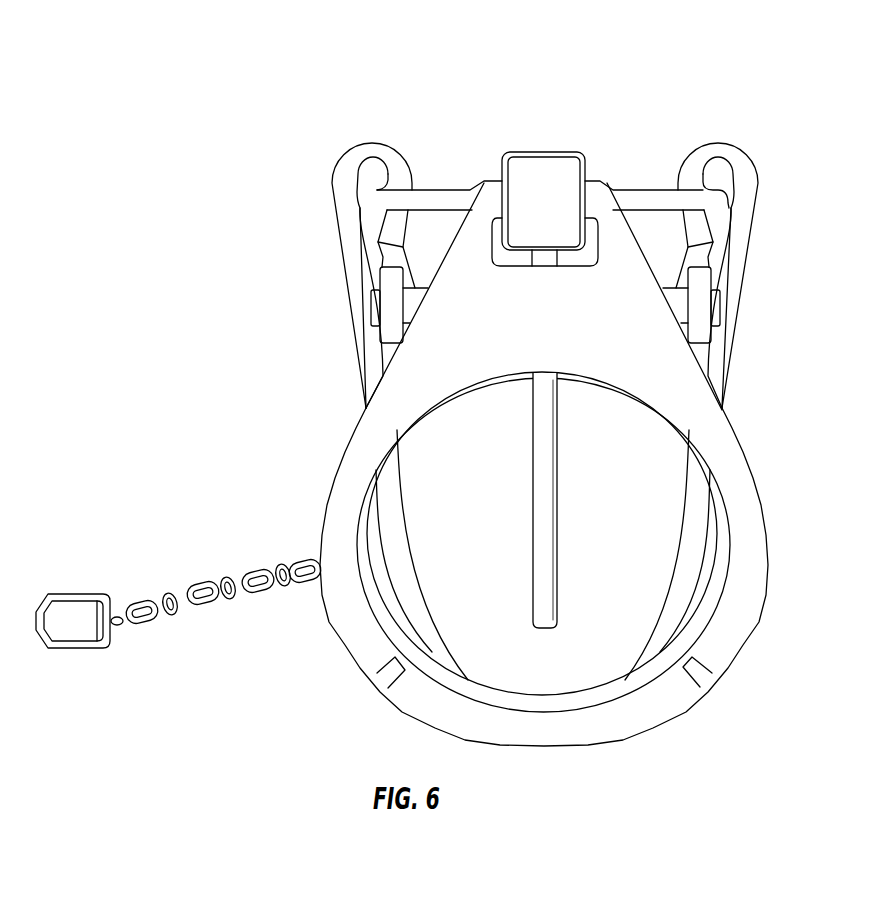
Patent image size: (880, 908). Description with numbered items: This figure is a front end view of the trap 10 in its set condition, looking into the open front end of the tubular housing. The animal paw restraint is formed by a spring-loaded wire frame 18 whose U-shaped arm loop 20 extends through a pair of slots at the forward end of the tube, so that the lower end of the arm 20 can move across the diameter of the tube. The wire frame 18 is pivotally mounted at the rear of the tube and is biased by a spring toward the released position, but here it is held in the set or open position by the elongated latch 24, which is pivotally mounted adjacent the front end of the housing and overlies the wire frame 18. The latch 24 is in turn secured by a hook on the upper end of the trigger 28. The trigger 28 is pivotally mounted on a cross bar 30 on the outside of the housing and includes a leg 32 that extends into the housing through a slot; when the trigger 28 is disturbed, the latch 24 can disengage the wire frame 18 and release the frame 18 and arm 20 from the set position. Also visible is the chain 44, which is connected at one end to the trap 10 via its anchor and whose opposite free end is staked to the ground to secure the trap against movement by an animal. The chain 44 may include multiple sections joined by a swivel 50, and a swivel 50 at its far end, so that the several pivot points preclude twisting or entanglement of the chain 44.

The trap 10 is at (203, 158).
The wire frame 18 is at (650, 200).
The U-shaped arm loop 20 is at (737, 220).
The latch 24 is at (545, 165).
The trigger 28 is at (531, 471).
The cross bar 30 is at (678, 303).
The leg 32 is at (540, 542).
The chain 44 is at (168, 617).
The swivel 50 is at (78, 650).